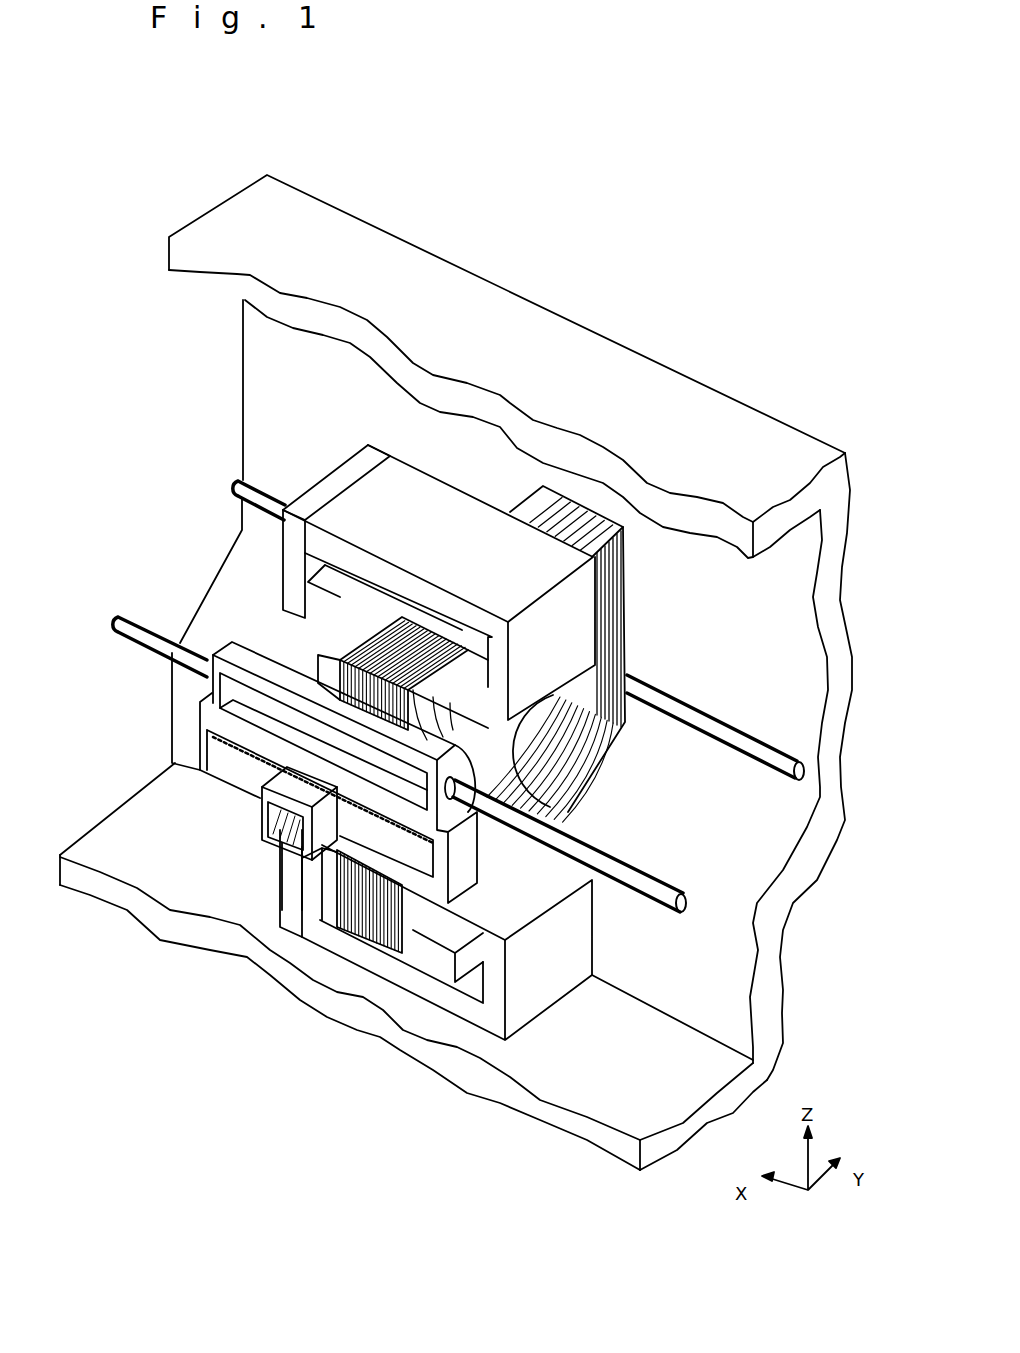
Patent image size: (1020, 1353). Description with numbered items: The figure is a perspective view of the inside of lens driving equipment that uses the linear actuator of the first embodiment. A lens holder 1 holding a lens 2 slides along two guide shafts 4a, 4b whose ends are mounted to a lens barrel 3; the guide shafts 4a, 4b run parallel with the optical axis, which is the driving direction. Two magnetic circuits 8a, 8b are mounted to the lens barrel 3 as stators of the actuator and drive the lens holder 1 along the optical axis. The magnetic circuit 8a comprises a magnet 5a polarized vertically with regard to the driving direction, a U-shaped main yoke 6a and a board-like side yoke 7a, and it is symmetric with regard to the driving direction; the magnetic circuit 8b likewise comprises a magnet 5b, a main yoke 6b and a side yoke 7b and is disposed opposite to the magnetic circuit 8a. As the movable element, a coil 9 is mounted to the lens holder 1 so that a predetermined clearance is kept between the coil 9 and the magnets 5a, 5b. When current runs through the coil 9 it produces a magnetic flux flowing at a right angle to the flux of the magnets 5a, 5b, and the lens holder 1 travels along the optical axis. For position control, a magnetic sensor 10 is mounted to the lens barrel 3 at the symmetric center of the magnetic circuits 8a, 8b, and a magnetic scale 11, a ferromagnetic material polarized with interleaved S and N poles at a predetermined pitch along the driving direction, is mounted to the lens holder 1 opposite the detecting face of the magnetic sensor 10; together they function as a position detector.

The lens holder 1 is at (330, 647).
The lens 2 is at (505, 745).
The lens barrel 3 is at (522, 1070).
The guide shaft 4a is at (118, 623).
The guide shaft 4b is at (780, 760).
The magnet 5a is at (412, 613).
The magnet 5b is at (427, 970).
The main yoke 6a is at (374, 567).
The main yoke 6b is at (322, 938).
The side yoke 7a is at (295, 562).
The side yoke 7b is at (288, 898).
The magnetic circuit 8a is at (439, 441).
The magnetic circuit 8b is at (329, 971).
The coil 9 is at (622, 603).
The magnetic sensor 10 is at (262, 815).
The magnetic scale 11 is at (222, 762).